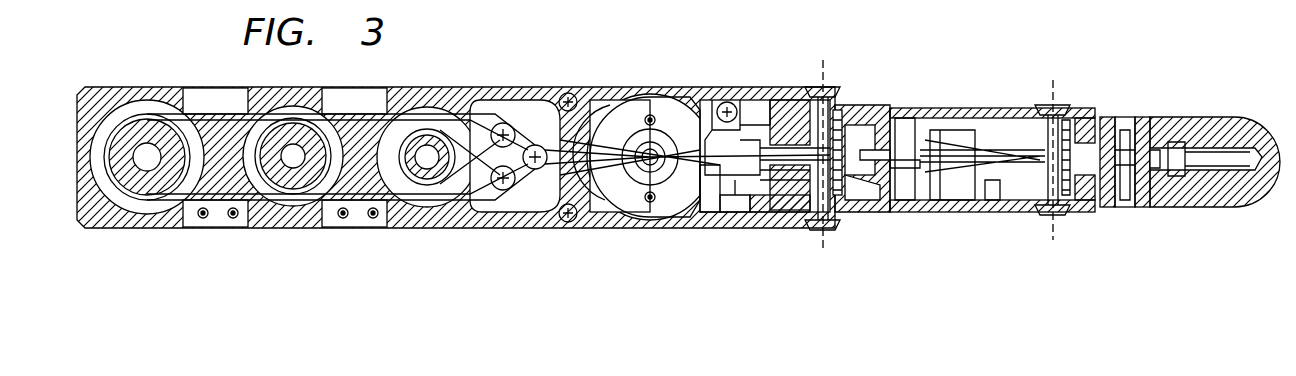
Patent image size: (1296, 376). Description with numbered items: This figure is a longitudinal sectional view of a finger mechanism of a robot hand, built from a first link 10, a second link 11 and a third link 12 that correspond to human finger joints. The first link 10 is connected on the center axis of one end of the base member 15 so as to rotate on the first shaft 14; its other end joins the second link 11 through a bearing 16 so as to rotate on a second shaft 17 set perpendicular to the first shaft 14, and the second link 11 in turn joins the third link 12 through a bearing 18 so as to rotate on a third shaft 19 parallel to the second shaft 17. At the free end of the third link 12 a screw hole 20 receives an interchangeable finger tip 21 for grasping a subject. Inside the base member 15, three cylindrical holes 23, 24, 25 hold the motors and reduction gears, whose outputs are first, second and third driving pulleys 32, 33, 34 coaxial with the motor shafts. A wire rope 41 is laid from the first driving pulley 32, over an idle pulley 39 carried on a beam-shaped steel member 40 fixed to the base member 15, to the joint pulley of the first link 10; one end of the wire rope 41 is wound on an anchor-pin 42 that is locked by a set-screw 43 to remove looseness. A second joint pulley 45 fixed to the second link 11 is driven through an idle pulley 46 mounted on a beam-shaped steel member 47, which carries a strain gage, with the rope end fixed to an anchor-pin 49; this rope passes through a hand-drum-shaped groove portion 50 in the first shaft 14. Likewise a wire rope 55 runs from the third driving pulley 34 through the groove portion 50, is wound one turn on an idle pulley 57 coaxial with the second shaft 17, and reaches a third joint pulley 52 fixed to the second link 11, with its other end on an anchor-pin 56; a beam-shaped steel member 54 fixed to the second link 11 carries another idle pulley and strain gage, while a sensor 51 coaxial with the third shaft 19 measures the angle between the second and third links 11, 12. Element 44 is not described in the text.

The first link 10 is at (766, 228).
The second link 11 is at (945, 108).
The third link 12 is at (1130, 115).
The first shaft 14 is at (632, 228).
The base member 15 is at (147, 87).
The bearing 16 is at (852, 100).
The second shaft 17 is at (815, 235).
The bearing 18 is at (1080, 105).
The third shaft 19 is at (1040, 220).
The screw hole 20 is at (1162, 208).
The finger tip 21 is at (1205, 117).
The cylindrical hole 23 is at (425, 228).
The cylindrical hole 24 is at (285, 228).
The cylindrical hole 25 is at (137, 228).
The first driving pulley 32 is at (445, 228).
The second driving pulley 33 is at (315, 228).
The third driving pulley 34 is at (178, 228).
The idle pulley 39 is at (523, 97).
The beam-shaped steel member 40 is at (553, 97).
The wire rope 41 is at (480, 228).
The anchor-pin 42 is at (755, 97).
The set-screw 43 is at (722, 97).
The link 44 is at (882, 222).
The second joint pulley 45 is at (855, 228).
The idle pulley 46 is at (692, 228).
The beam-shaped steel member 47 is at (716, 228).
The anchor-pin 49 is at (906, 105).
The groove portion 50 is at (635, 100).
The sensor with mechanical contact 51 is at (1078, 215).
The third joint pulley 52 is at (1090, 110).
The beam-shaped steel member 54 is at (960, 212).
The wire rope 55 is at (978, 105).
The anchor-pin 56 is at (1122, 210).
The idle pulley 57 is at (795, 97).